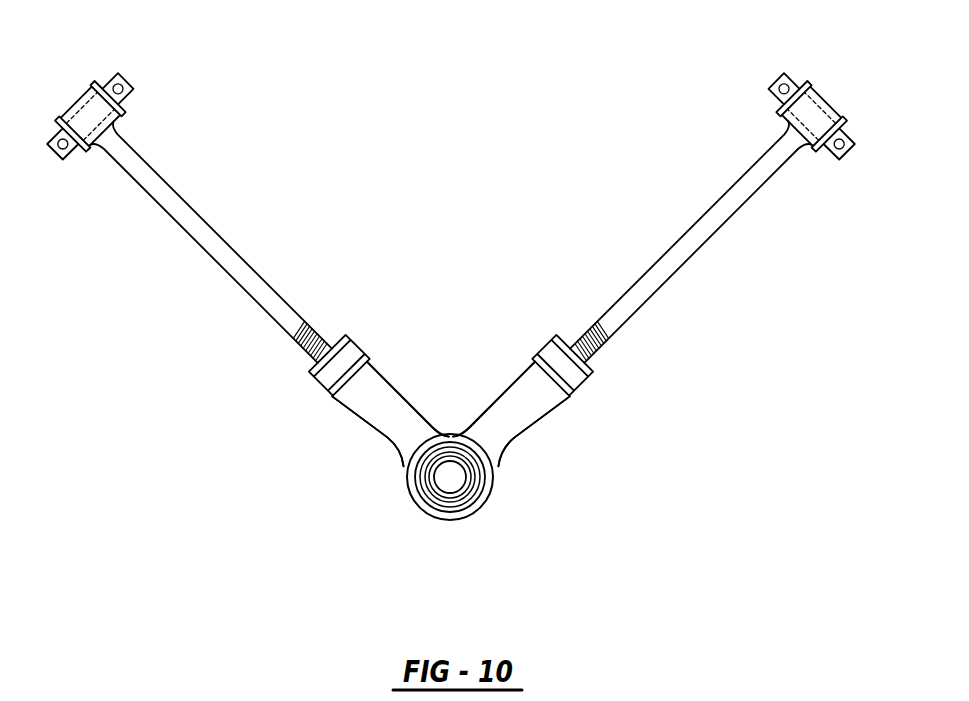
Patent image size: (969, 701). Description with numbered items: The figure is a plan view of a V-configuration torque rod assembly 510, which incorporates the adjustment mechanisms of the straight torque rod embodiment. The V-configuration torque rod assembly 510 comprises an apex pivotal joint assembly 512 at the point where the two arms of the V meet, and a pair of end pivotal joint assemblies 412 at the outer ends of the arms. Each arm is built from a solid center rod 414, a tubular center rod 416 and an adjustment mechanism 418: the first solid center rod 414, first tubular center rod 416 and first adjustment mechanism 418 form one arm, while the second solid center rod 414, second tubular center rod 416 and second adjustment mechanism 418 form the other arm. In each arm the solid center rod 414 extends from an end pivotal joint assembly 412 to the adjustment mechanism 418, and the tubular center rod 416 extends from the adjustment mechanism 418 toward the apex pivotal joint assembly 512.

The end pivotal joint assembly 412 is at (86, 116).
The solid center rod 414 is at (206, 224).
The tubular center rod 416 is at (380, 390).
The adjustment mechanism 418 is at (310, 395).
The V-configuration torque rod assembly 510 is at (508, 165).
The apex pivotal joint assembly 512 is at (495, 522).